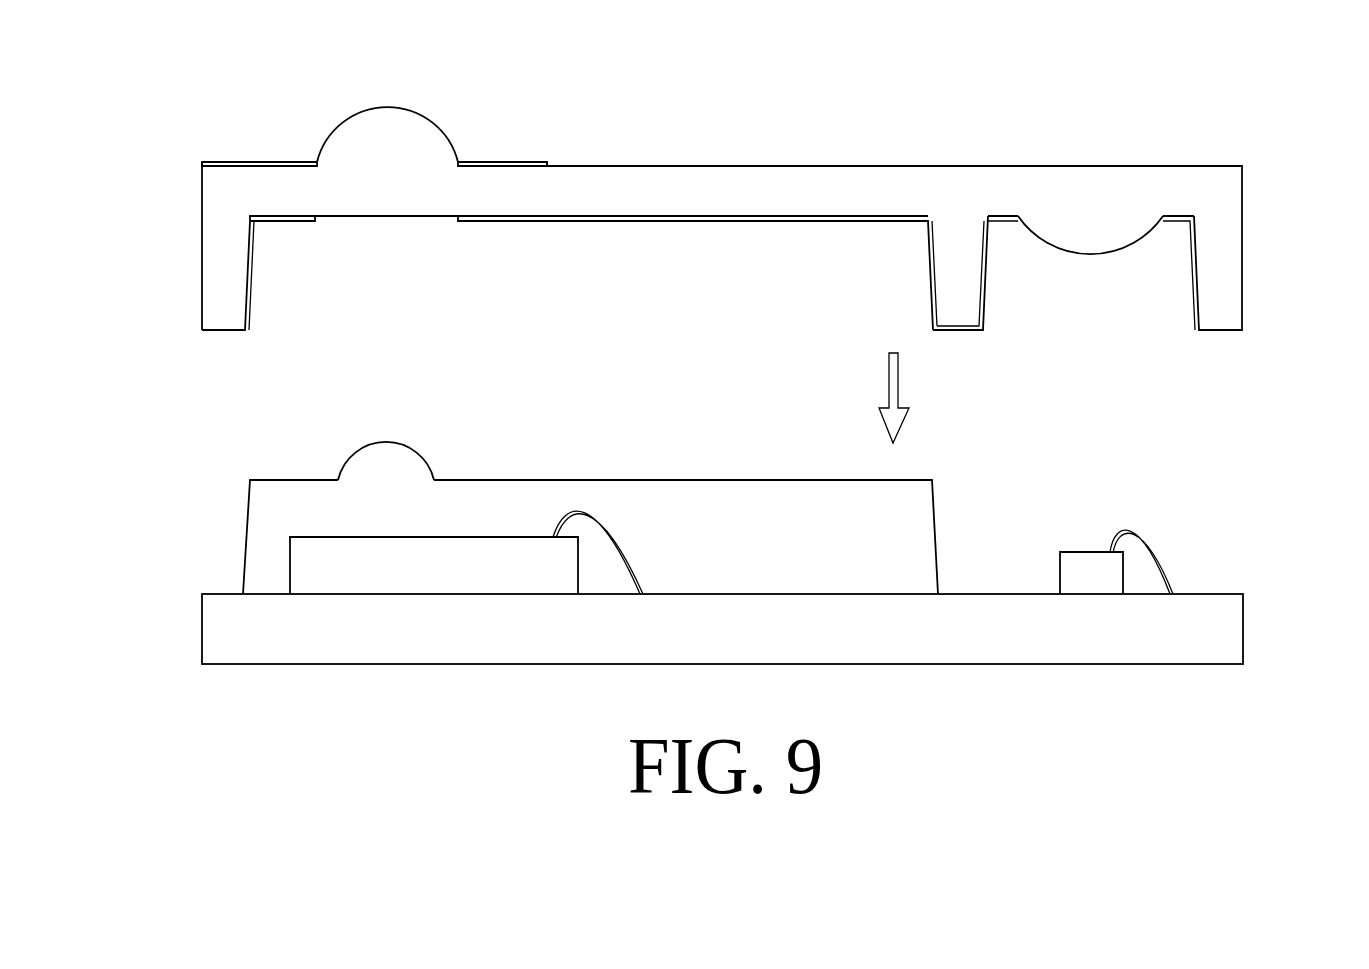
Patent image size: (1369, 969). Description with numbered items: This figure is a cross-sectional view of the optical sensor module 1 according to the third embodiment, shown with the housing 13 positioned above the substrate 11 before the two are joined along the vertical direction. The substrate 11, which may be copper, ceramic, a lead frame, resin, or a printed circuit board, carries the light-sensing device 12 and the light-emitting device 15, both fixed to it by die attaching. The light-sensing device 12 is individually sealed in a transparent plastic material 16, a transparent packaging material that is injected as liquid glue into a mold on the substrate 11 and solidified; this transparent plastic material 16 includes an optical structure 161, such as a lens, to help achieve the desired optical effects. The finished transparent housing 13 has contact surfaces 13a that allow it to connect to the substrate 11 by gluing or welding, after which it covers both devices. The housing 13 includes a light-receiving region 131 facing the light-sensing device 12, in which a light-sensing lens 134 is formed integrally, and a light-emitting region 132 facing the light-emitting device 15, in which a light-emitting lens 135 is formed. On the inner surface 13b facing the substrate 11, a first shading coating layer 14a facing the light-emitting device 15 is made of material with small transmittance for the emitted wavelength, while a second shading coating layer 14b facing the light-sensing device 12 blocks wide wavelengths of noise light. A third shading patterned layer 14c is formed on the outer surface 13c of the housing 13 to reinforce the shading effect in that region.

The optical sensor module 1 is at (1292, 113).
The substrate 11 is at (925, 648).
The light-sensing device 12 is at (508, 547).
The housing 13 is at (845, 170).
The contact surface 13a is at (220, 345).
The inner surface 13b is at (292, 229).
The outer surface 13c is at (258, 157).
The light-receiving region 131 is at (393, 253).
The light-emitting region 132 is at (1082, 272).
The light-sensing lens 134 is at (427, 140).
The light-emitting lens 135 is at (1047, 222).
The first shading coating layer 14a is at (1193, 250).
The second shading coating layer 14b is at (687, 222).
The third shading patterned layer 14c is at (523, 160).
The light-emitting device 15 is at (1070, 560).
The transparent plastic material 16 is at (727, 492).
The optical structure 161 is at (403, 452).